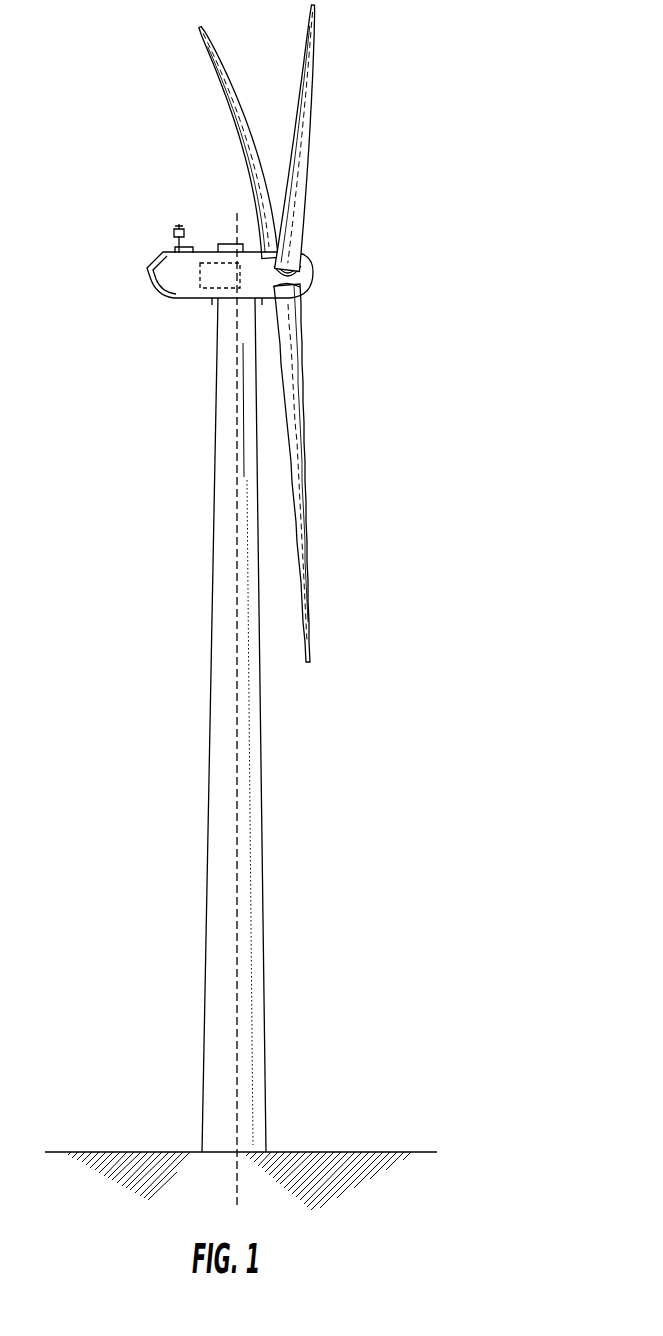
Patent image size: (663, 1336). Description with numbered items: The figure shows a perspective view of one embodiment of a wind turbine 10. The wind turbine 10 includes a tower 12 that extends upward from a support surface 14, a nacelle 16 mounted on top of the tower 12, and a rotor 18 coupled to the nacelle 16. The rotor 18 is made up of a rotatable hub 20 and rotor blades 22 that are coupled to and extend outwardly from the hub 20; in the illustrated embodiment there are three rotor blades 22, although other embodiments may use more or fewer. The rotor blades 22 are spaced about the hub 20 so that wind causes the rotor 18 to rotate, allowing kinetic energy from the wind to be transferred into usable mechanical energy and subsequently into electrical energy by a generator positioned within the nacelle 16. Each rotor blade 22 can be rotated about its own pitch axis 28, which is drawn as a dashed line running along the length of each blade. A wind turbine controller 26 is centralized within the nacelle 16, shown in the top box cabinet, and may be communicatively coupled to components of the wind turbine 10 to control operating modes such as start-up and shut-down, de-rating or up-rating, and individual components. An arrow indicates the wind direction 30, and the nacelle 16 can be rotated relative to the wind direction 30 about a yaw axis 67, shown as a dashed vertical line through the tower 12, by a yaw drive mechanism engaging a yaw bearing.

The wind turbine 10 is at (408, 90).
The tower 12 is at (218, 842).
The support surface 14 is at (125, 1152).
The nacelle 16 is at (192, 303).
The rotor 18 is at (316, 252).
The rotatable hub 20 is at (316, 280).
The rotor blade 22 is at (297, 125).
The wind turbine controller 26 is at (210, 262).
The pitch axis 28 is at (235, 138).
The wind direction 30 is at (402, 273).
The yaw axis 67 is at (235, 410).